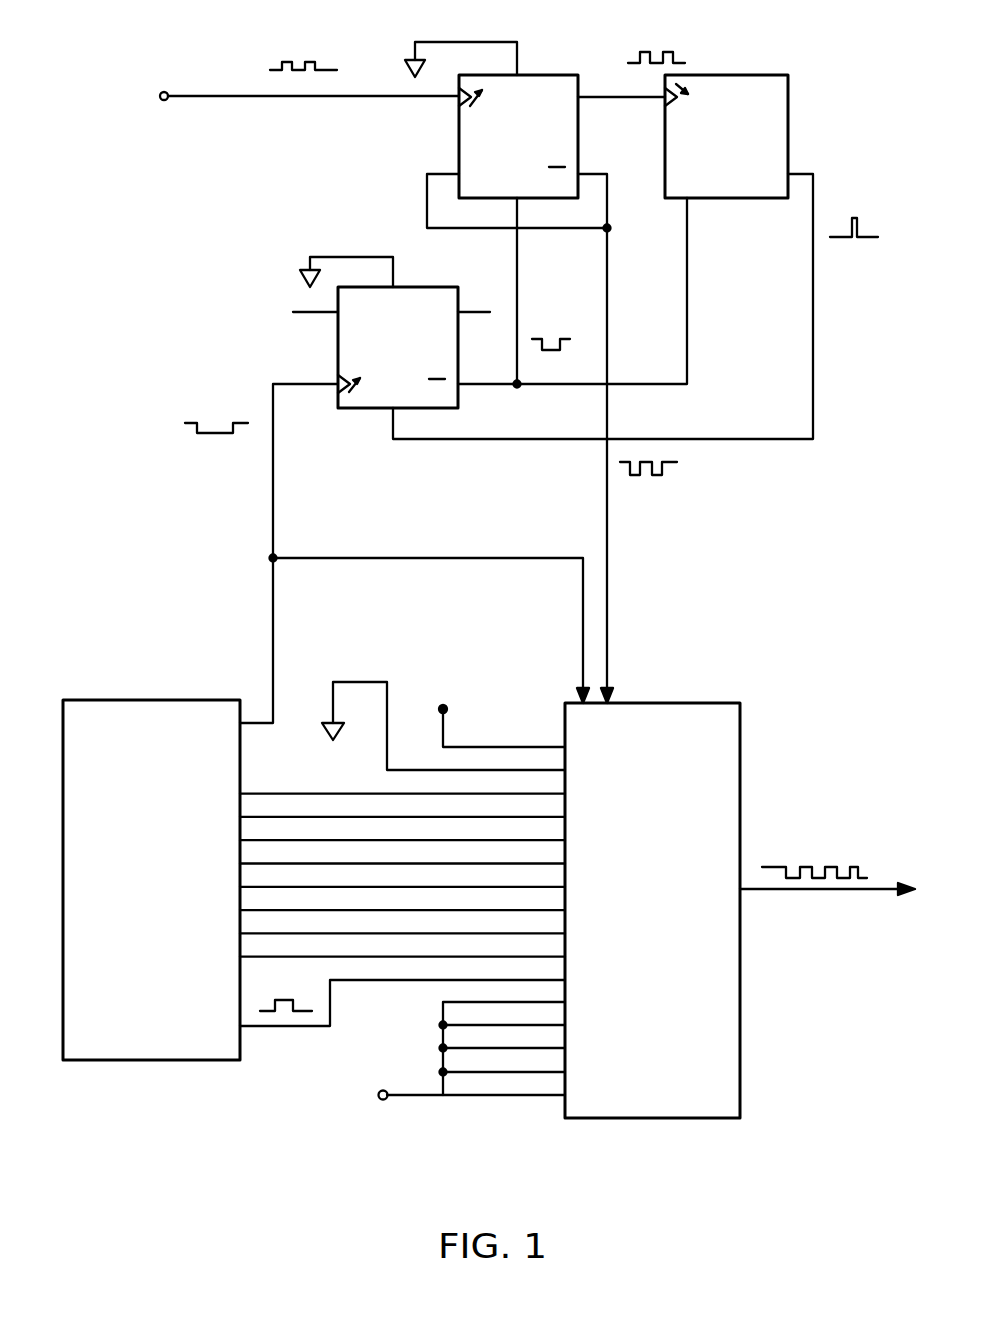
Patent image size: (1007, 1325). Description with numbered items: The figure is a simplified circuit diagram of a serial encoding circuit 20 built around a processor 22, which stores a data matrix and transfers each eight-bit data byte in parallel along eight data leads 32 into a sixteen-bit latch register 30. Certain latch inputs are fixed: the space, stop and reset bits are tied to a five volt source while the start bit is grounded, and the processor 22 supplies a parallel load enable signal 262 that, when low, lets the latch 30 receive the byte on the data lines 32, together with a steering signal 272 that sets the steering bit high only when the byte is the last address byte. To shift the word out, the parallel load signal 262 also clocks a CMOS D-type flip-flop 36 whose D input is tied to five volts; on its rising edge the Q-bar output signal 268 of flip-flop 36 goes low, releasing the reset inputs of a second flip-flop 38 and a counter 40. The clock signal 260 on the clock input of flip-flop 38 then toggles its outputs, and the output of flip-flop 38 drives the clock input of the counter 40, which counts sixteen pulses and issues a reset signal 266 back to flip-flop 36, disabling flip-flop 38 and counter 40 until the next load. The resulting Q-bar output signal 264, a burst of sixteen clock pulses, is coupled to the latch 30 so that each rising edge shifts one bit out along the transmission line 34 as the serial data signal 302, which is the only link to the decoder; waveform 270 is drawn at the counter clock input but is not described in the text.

The serial encoding circuit 20 is at (485, 590).
The processor 22 is at (92, 1061).
The latch register 30 is at (690, 1120).
The data leads 32 is at (327, 788).
The transmission line 34 is at (865, 893).
The flip-flop 36 is at (368, 410).
The flip-flop 38 is at (459, 125).
The counter 40 is at (788, 138).
The clock signal 260 is at (318, 40).
The parallel load enable signal 262 is at (240, 408).
The Q-bar output signal 264 is at (655, 463).
The reset signal 266 is at (873, 203).
The Q-bar output signal 268 is at (570, 320).
The counter clock waveform 270 is at (650, 50).
The steering signal 272 is at (287, 999).
The serial data signal 302 is at (832, 842).